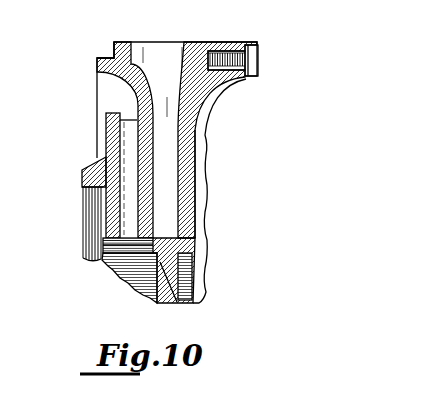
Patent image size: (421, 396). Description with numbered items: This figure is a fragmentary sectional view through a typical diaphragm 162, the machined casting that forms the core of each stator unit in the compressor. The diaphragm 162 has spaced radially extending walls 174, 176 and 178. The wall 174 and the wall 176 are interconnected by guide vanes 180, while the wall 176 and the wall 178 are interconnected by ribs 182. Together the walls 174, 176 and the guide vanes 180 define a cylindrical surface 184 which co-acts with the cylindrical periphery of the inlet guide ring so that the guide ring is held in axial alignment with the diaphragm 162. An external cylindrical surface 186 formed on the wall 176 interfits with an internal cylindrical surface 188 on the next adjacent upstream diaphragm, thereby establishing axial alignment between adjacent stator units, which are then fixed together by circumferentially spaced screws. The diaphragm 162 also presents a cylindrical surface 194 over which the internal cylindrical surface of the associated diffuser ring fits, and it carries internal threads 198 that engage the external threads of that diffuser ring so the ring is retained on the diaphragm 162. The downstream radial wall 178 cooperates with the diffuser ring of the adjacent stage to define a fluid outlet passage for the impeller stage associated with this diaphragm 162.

The diaphragm 162 is at (217, 118).
The radially extending wall 174 is at (106, 124).
The radially extending wall 176 is at (142, 130).
The radially extending wall 178 is at (195, 165).
The guide vanes 180 is at (127, 191).
The ribs 182 is at (162, 53).
The cylindrical surface 184 is at (157, 250).
The external cylindrical surface 186 is at (104, 57).
The internal cylindrical surface 188 is at (258, 60).
The cylindrical surface 194 is at (114, 113).
The internal threads 198 is at (83, 200).